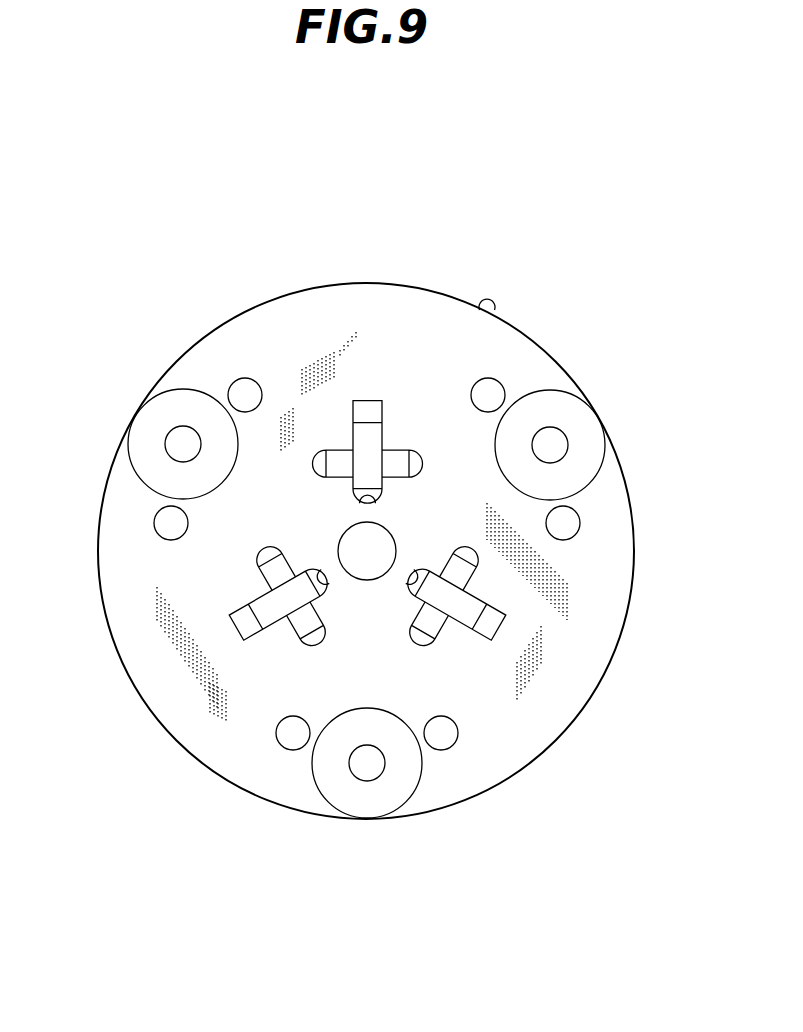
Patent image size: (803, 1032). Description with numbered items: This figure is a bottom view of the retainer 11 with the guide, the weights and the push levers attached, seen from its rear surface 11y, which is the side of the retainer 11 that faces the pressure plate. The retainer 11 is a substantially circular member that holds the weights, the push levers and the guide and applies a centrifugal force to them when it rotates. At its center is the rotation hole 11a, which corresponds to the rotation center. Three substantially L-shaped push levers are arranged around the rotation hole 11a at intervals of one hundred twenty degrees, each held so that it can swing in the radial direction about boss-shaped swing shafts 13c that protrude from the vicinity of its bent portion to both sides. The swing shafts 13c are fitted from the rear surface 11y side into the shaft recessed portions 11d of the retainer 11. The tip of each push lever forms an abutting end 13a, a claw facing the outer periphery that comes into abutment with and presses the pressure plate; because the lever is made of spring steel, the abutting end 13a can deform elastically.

The retainer 11 is at (372, 540).
The rear surface 11y is at (193, 373).
The rotation hole 11a is at (394, 535).
The shaft recessed portion 11d is at (361, 540).
The abutting end 13a is at (372, 437).
The swing shaft 13c is at (343, 460).